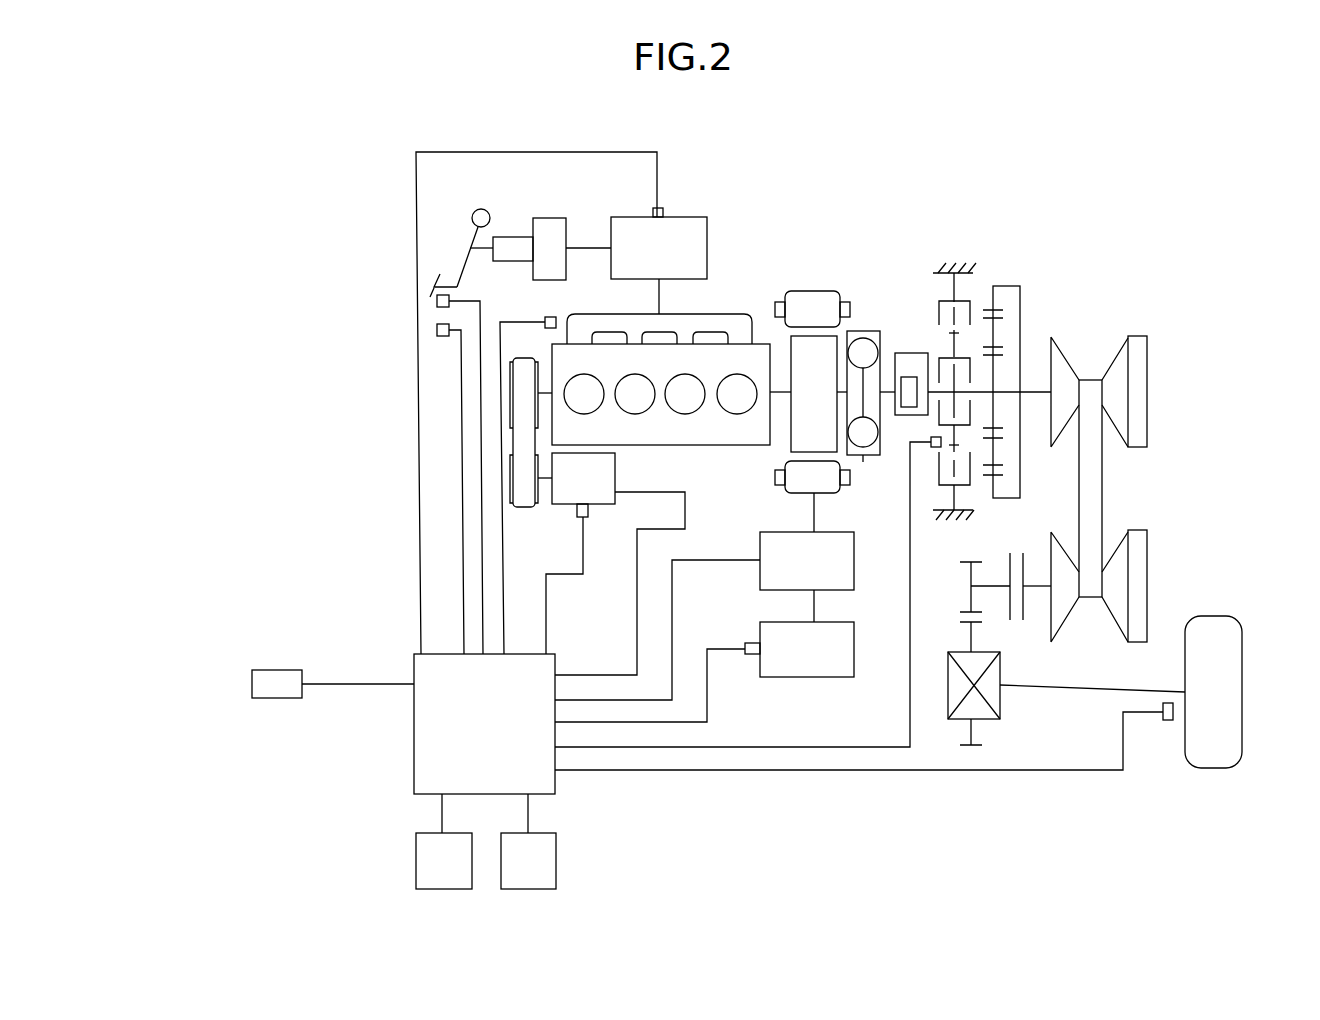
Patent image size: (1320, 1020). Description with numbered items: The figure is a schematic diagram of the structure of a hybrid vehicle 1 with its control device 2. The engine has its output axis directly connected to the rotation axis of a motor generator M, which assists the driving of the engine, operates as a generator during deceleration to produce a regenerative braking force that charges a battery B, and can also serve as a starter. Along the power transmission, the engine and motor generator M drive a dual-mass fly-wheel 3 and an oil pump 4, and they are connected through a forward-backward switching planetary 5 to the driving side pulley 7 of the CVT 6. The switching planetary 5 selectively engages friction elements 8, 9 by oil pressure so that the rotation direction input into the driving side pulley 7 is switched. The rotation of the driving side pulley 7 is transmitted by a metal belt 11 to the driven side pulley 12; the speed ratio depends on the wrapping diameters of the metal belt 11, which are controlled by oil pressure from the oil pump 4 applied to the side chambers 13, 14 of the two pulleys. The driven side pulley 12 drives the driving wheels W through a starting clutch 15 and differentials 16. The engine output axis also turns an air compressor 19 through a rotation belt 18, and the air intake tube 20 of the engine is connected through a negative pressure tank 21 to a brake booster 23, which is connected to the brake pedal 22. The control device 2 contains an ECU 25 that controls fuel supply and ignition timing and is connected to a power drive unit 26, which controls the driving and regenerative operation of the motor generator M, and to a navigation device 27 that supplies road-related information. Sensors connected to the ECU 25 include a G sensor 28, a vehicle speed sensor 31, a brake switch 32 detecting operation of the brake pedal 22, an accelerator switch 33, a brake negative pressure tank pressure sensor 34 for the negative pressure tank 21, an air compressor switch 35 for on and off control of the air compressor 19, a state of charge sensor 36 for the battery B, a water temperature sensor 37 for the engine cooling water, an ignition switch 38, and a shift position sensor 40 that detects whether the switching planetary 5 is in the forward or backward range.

The hybrid vehicle 1 is at (822, 206).
The control device 2 is at (390, 606).
The dual-mass fly-wheel 3 is at (872, 331).
The oil pump 4 is at (913, 353).
The forward-backward switching planetary 5 is at (1012, 286).
The CVT 6 is at (1122, 327).
The driving side pulley 7 is at (1122, 415).
The friction element 8 is at (970, 297).
The friction element 9 is at (980, 494).
The metal belt 11 is at (1094, 474).
The driven side pulley 12 is at (1122, 608).
The side chamber 13 is at (1147, 340).
The side chamber 14 is at (1140, 552).
The starting clutch 15 is at (1024, 629).
The differentials 16 is at (1002, 708).
The rotation belt 18 is at (523, 497).
The air compressor 19 is at (615, 493).
The air intake tube 20 is at (730, 313).
The negative pressure tank 21 is at (693, 217).
The brake pedal 22 is at (463, 264).
The brake booster 23 is at (549, 218).
The ECU 25 is at (414, 779).
The power drive unit 26 is at (760, 547).
The navigation device 27 is at (556, 855).
The G sensor 28 is at (416, 855).
The vehicle speed sensor 31 is at (1167, 722).
The brake switch 32 is at (437, 299).
The accelerator switch 33 is at (437, 331).
The brake negative pressure tank pressure sensor 34 is at (662, 208).
The air compressor switch 35 is at (585, 520).
The state of charge sensor 36 is at (745, 647).
The water temperature sensor 37 is at (545, 320).
The ignition switch 38 is at (282, 668).
The shift position sensor 40 is at (930, 450).
The motor generator M is at (840, 330).
The battery B is at (806, 680).
The driving wheels W is at (1213, 768).